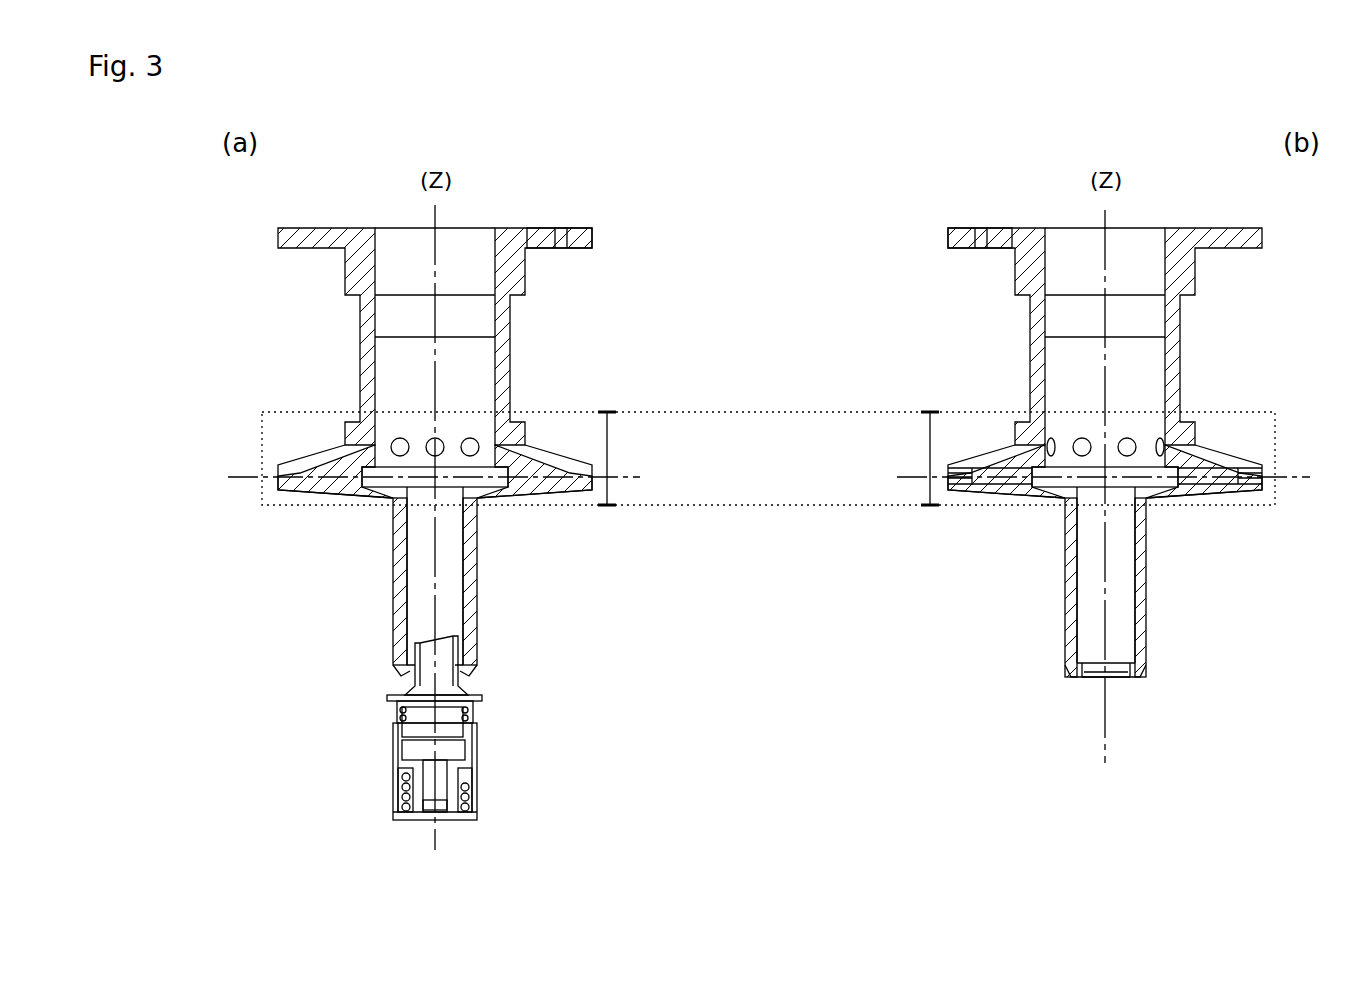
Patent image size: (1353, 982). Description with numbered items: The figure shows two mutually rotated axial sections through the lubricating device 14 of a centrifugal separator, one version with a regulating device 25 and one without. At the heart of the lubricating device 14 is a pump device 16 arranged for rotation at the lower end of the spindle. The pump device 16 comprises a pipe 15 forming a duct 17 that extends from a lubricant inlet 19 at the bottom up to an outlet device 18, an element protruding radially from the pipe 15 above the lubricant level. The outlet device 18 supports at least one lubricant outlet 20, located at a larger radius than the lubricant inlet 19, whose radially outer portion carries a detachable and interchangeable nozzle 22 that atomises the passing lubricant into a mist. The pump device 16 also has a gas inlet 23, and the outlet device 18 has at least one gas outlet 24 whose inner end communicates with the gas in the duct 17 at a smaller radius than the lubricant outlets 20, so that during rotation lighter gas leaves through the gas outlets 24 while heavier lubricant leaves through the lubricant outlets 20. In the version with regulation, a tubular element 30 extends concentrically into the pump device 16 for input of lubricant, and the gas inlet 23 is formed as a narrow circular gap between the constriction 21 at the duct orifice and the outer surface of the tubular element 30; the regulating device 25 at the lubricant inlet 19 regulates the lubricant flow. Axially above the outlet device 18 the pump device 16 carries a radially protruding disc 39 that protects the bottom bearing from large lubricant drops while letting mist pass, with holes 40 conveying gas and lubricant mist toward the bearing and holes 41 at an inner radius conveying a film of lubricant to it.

The lubricating device 14 is at (688, 187).
The radially protruding disc 39 is at (948, 239).
The holes 40 is at (528, 252).
The holes at an inner radius 41 is at (1010, 250).
The gas outlet 24 is at (1078, 446).
The outlet device 18 is at (563, 497).
The nozzle 22 is at (930, 470).
The lubricant outlet 20 is at (967, 487).
The duct 17 is at (459, 537).
The pipe 15 is at (470, 560).
The pump device 16 is at (497, 593).
The lubricant inlet 19 is at (1100, 673).
The tubular element 30 is at (462, 650).
The constriction 21 is at (458, 670).
The gas inlet 23 is at (1090, 678).
The regulating device 25 is at (497, 750).